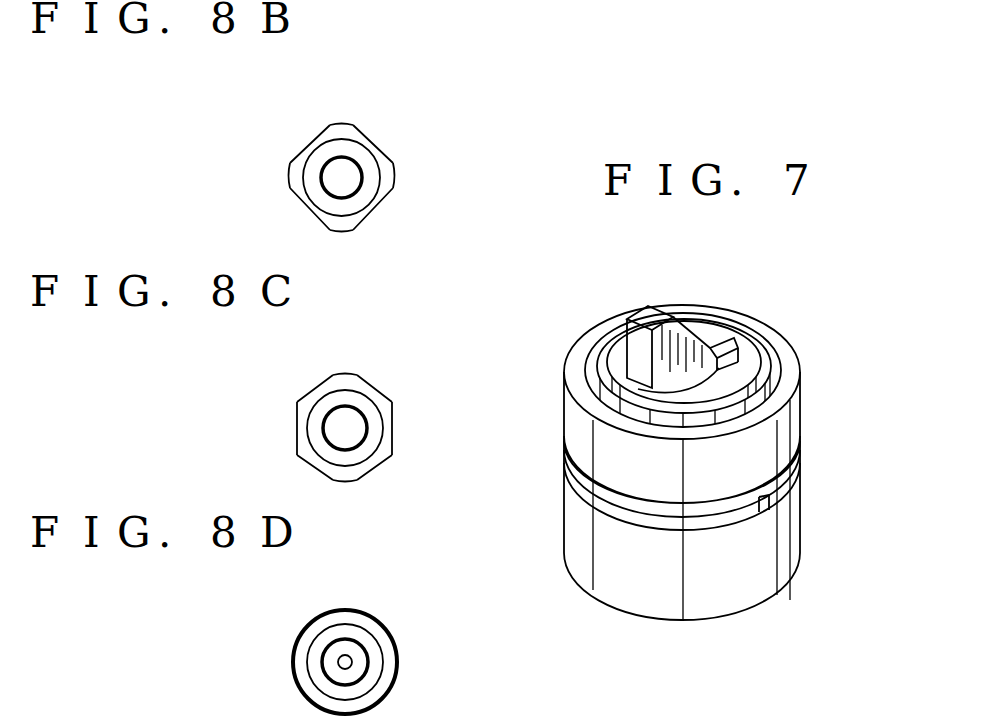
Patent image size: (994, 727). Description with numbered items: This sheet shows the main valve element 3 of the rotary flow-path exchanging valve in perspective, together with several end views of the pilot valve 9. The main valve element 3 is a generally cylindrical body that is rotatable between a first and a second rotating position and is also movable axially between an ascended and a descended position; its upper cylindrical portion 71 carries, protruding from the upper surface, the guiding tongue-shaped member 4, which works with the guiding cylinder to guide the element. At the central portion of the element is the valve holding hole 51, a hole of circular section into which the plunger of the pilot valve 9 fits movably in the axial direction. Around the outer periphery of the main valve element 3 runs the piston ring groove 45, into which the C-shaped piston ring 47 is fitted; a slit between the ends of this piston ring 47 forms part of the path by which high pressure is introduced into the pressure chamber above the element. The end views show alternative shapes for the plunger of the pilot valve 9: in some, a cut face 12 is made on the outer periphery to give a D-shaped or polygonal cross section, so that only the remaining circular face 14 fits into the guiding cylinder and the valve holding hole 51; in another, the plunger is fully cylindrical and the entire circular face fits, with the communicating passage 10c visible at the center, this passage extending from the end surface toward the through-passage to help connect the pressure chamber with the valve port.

In FIG. 7, the main valve element 3 is at (562, 539).
In FIG. 7, the guiding tongue-shaped member 4 is at (658, 338).
In FIG. 8B, the pilot valve 9 is at (400, 149).
In FIG. 8C, the pilot valve 9 is at (403, 412).
In FIG. 8D, the pilot valve 9 is at (407, 650).
In FIG. 8D, the communicating passage 10c is at (343, 660).
In FIG. 8B, the cut face 12 is at (311, 140).
In FIG. 8C, the cut face 12 is at (318, 386).
In FIG. 8B, the circular face 14 is at (342, 124).
In FIG. 8C, the circular face 14 is at (343, 376).
In FIG. 8D, the circular face 14 is at (293, 662).
In FIG. 7, the piston ring groove 45 is at (737, 517).
In FIG. 7, the piston ring 47 is at (798, 494).
In FIG. 7, the valve holding hole 51 is at (744, 345).
In FIG. 7, the cylindrical rim portion 71 is at (800, 418).